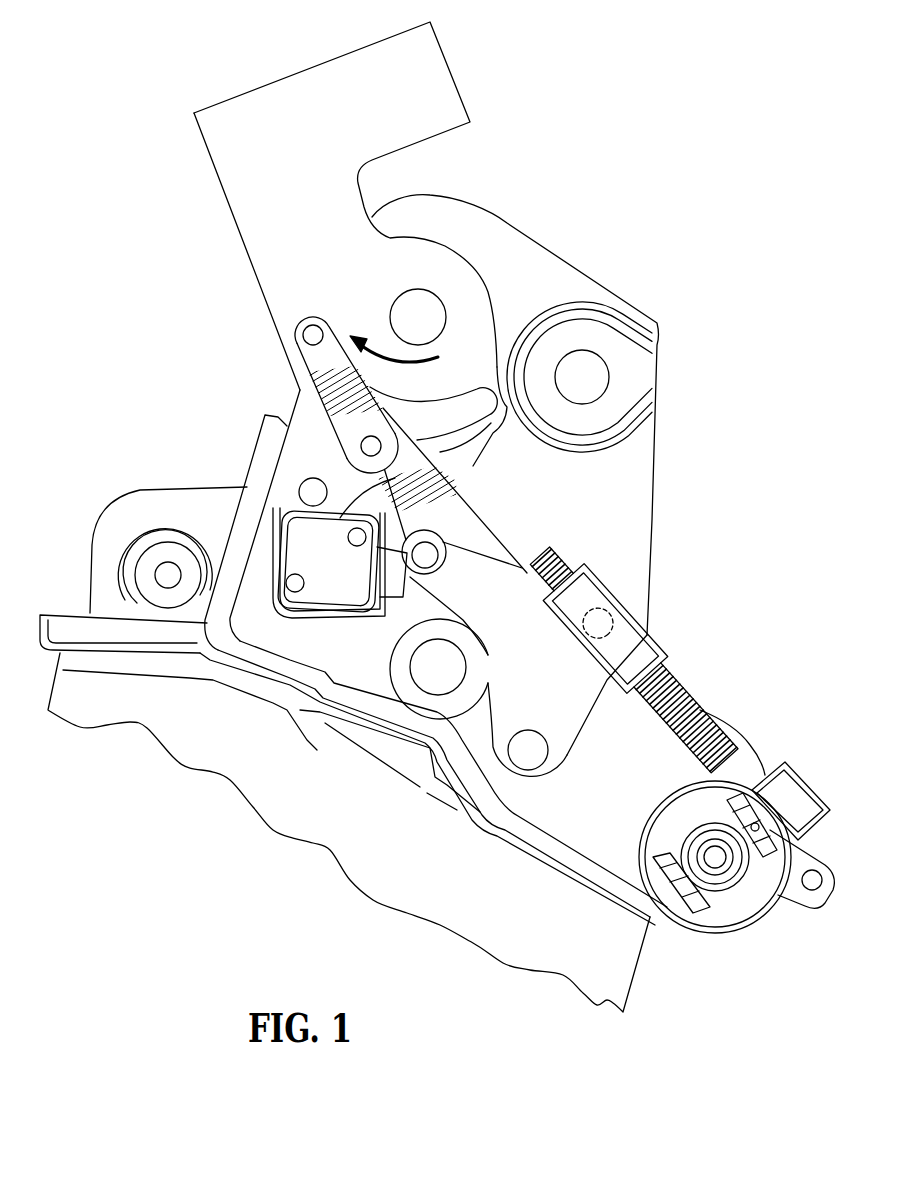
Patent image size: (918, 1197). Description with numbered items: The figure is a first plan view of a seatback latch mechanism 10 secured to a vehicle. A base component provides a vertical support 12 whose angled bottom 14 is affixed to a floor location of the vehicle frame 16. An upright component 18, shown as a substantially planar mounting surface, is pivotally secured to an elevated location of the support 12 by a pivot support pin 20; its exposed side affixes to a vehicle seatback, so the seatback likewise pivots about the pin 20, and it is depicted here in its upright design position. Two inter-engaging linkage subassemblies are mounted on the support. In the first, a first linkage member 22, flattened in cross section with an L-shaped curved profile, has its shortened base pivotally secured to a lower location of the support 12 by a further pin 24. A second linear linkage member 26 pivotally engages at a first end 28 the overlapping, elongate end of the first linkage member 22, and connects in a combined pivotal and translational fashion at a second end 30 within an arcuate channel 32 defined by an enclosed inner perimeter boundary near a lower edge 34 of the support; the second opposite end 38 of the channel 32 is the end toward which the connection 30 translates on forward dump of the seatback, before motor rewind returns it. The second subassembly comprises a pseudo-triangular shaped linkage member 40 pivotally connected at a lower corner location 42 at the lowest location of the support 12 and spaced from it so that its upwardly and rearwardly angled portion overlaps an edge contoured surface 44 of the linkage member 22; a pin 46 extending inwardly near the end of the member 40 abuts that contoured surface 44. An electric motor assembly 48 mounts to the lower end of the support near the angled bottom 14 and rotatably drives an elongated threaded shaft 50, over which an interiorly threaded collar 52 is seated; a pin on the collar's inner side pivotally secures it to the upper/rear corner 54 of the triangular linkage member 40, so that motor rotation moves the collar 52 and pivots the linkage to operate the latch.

The latch mechanism 10 is at (162, 348).
The vertical support 12 is at (292, 442).
The angled bottom 14 is at (293, 672).
The vehicle frame 16 is at (420, 859).
The upright component 18 is at (310, 161).
The pivot support pin 20 is at (435, 313).
The first linkage member 22 is at (473, 523).
The pin 24 is at (445, 655).
The second linear linkage member 26 is at (310, 360).
The first end 28 is at (361, 448).
The second end 30 is at (313, 325).
The arcuate channel 32 is at (418, 414).
The lower edge 34 is at (500, 400).
The second opposite end 38 is at (384, 445).
The pseudo-triangular shaped linkage member 40 is at (567, 757).
The lower corner location 42 is at (530, 745).
The edge contoured surface 44 is at (363, 490).
The pin 46 is at (425, 555).
The electric motor assembly 48 is at (738, 905).
The threaded shaft 50 is at (690, 684).
The collar 52 is at (622, 622).
The upper/rear corner 54 is at (570, 633).